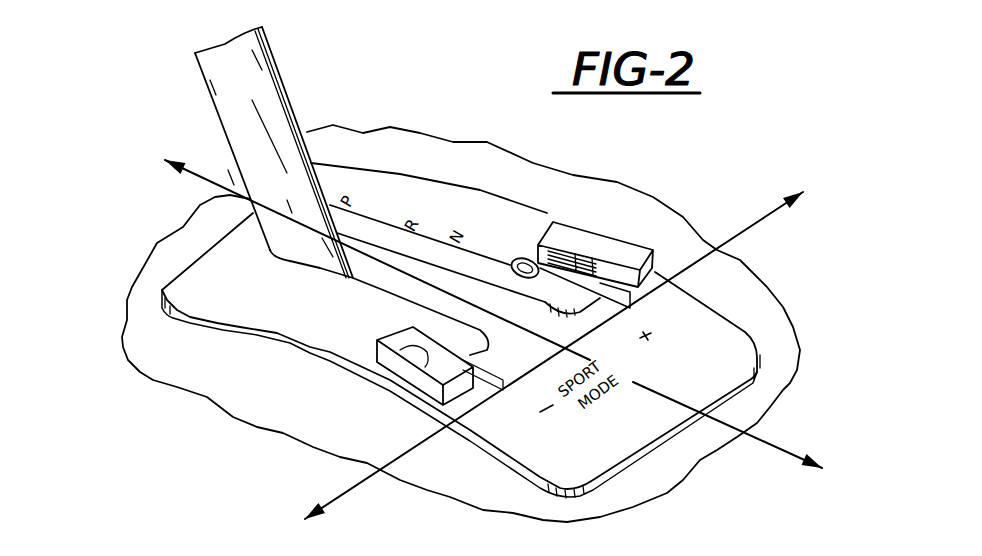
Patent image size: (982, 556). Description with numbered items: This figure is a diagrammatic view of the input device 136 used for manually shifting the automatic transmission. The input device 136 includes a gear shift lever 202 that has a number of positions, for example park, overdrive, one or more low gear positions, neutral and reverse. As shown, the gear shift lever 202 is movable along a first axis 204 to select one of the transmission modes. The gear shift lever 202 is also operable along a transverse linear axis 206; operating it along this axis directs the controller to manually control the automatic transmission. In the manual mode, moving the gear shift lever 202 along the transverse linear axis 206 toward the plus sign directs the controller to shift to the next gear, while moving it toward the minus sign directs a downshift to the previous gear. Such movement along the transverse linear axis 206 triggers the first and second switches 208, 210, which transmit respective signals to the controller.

The input device 136 is at (205, 436).
The gear shift lever 202 is at (276, 100).
The first axis 204 is at (763, 447).
The transverse linear axis 206 is at (735, 238).
The first switch 208 is at (590, 247).
The second switch 210 is at (410, 350).